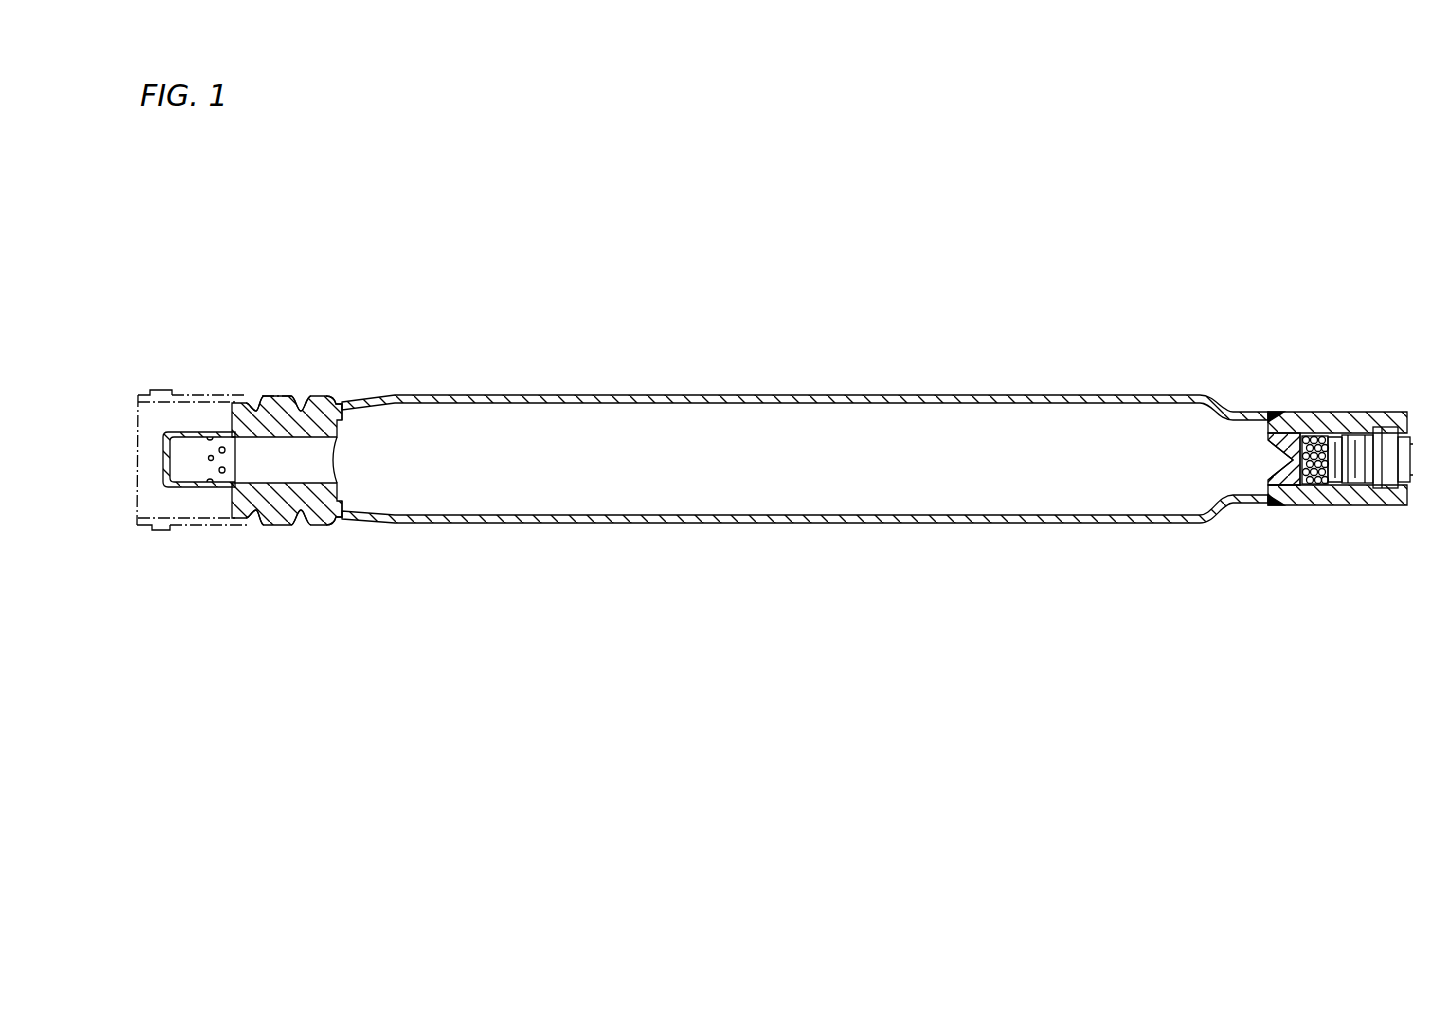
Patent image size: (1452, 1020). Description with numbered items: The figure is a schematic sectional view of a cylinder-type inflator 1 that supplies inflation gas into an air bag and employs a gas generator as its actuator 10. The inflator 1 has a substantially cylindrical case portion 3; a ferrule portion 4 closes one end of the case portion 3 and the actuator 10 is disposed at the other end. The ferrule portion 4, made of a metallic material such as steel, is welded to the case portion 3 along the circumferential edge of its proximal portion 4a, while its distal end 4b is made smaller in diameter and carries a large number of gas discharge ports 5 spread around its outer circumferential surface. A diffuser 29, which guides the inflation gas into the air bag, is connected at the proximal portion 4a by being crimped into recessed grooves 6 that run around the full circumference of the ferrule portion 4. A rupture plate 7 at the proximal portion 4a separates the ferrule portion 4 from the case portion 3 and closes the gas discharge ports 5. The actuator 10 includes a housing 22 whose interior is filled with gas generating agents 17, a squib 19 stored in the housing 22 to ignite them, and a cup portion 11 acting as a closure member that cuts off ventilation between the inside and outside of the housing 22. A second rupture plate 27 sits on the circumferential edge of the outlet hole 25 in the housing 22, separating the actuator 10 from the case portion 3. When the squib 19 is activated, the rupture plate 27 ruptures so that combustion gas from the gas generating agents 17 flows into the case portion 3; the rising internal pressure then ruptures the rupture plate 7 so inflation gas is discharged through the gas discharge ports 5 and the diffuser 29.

The inflator 1 is at (1170, 221).
The case portion 3 is at (795, 391).
The ferrule portion 4 is at (333, 394).
The proximal portion 4a is at (341, 400).
The distal end 4b is at (187, 431).
The gas discharge port 5 is at (211, 462).
The recessed grooves 6 is at (302, 402).
The rupture plate 7 is at (345, 462).
The actuator 10 is at (1340, 524).
The cup portion 11 is at (1290, 470).
The gas generating agents 17 is at (1322, 438).
The squib 19 is at (1412, 429).
The housing 22 is at (1307, 410).
The outlet hole 25 is at (1270, 453).
The rupture plate 27 is at (1268, 452).
The diffuser 29 is at (278, 526).